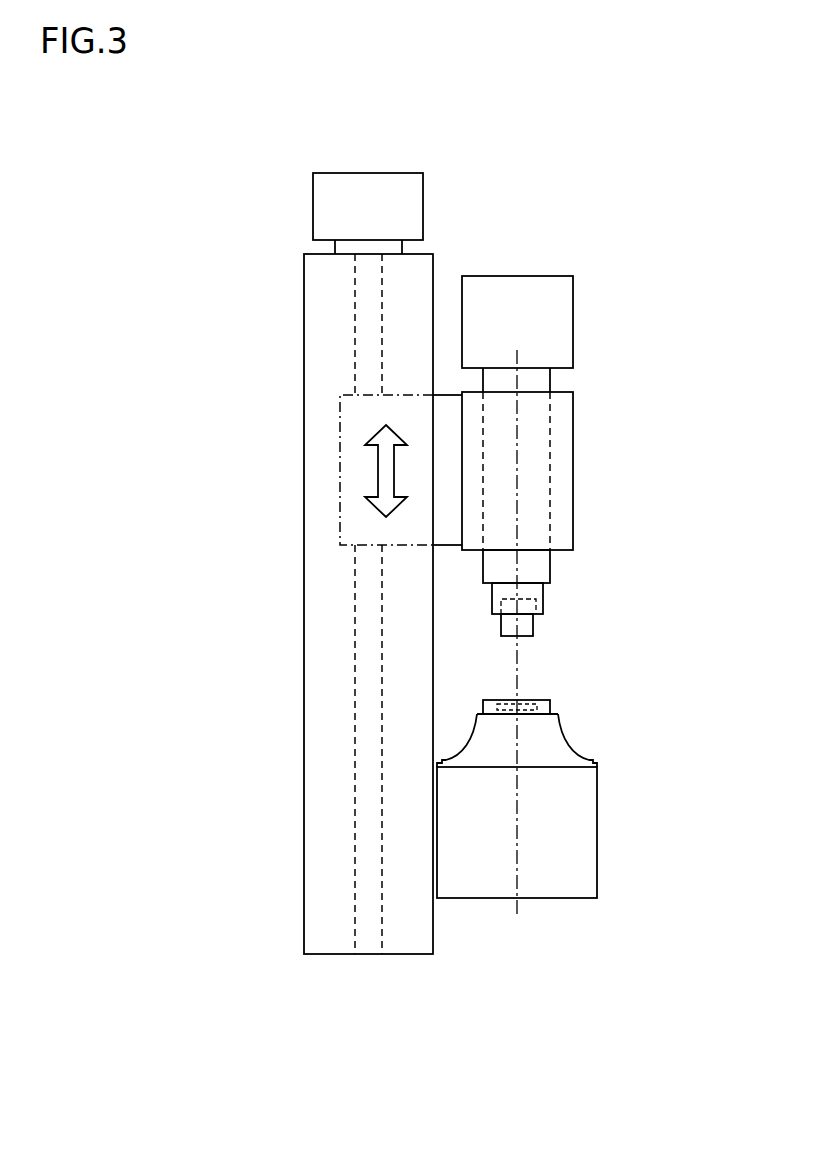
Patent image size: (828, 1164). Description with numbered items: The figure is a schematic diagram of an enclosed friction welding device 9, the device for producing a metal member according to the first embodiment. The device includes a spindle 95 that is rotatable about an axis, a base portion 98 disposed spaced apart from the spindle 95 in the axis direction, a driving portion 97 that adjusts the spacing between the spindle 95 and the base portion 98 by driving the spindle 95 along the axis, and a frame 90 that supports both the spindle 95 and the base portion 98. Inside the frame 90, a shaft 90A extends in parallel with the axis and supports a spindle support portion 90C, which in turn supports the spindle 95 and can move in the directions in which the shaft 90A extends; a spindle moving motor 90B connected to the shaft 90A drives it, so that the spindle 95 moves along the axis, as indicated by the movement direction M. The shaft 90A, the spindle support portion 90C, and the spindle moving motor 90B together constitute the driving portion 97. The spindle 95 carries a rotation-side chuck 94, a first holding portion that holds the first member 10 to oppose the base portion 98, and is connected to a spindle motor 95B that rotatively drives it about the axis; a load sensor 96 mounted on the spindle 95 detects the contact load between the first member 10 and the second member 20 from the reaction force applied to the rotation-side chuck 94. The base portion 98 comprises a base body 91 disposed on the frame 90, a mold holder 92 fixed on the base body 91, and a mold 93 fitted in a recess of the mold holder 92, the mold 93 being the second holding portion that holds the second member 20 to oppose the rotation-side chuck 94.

The enclosed friction welding device 9 is at (660, 212).
The first member 10 is at (525, 627).
The second member 20 is at (528, 708).
The frame 90 is at (418, 942).
The shaft 90A is at (362, 332).
The spindle moving motor 90B is at (326, 206).
The spindle support portion 90C is at (362, 420).
The base body 91 is at (588, 845).
The mold holder 92 is at (553, 740).
The mold 93 is at (553, 712).
The rotation-side chuck 94 is at (535, 598).
The spindle 95 is at (540, 378).
The spindle motor 95B is at (562, 322).
The load sensor 96 is at (540, 566).
The driving portion 97 is at (230, 188).
The base portion 98 is at (660, 692).
The movement direction M is at (378, 470).